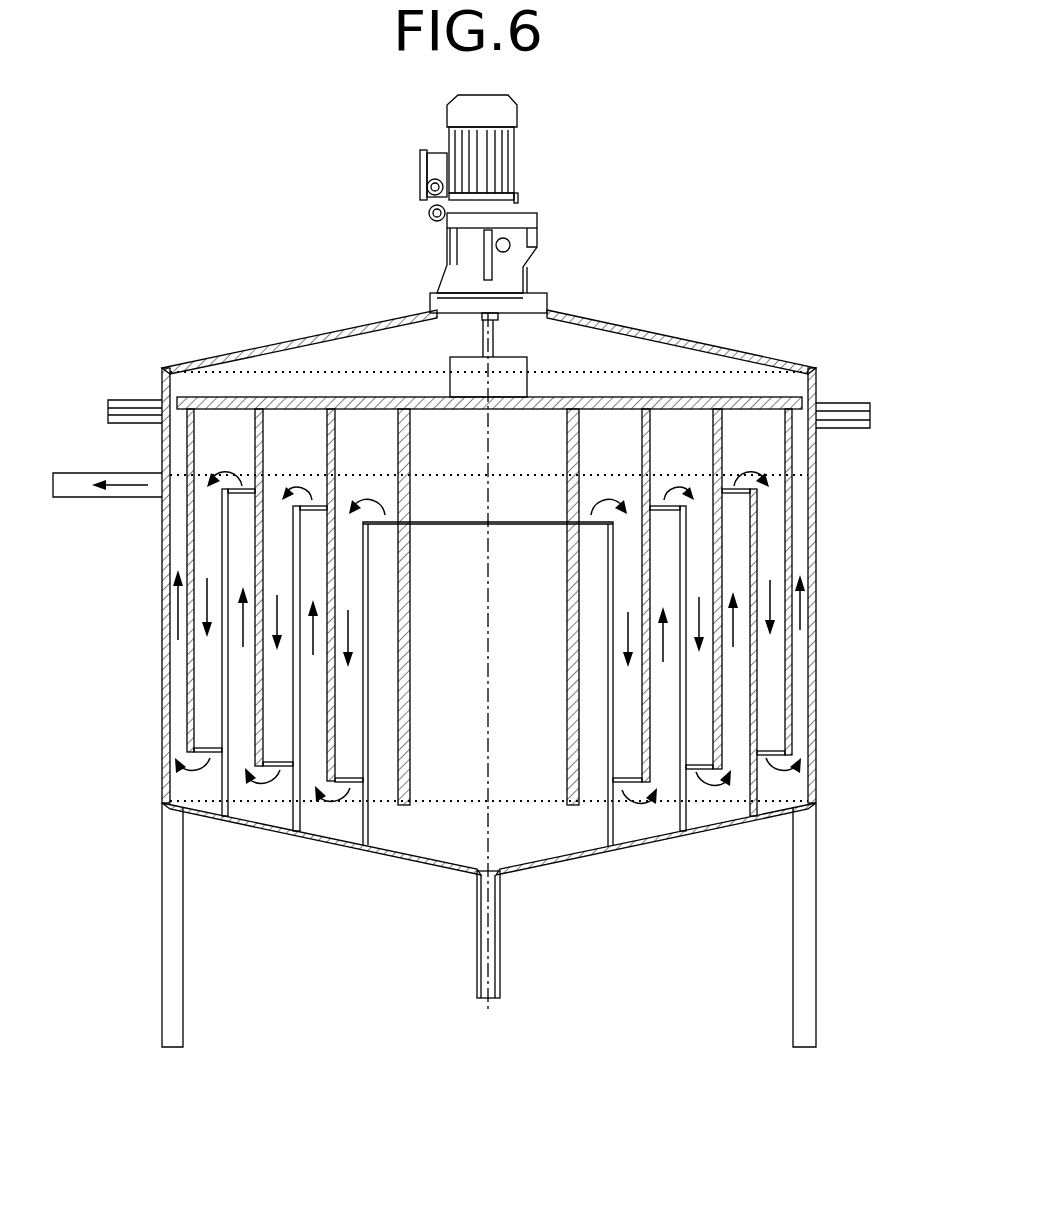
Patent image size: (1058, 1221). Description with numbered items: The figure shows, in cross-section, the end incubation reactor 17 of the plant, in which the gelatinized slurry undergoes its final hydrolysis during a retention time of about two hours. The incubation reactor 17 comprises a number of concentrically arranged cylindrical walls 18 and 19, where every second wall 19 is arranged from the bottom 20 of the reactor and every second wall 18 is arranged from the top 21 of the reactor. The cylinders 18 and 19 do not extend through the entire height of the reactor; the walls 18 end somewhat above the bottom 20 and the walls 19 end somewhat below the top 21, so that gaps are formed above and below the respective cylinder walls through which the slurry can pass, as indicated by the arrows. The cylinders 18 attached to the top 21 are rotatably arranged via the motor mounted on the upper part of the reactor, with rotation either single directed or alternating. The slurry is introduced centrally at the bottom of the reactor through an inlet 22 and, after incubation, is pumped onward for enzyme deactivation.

The incubation reactor 17 is at (852, 597).
The cylindrical walls arranged from the top 18 is at (398, 463).
The cylindrical walls arranged from the bottom 19 is at (367, 820).
The bottom 20 is at (490, 818).
The top 21 is at (372, 397).
The inlet 22 is at (480, 950).